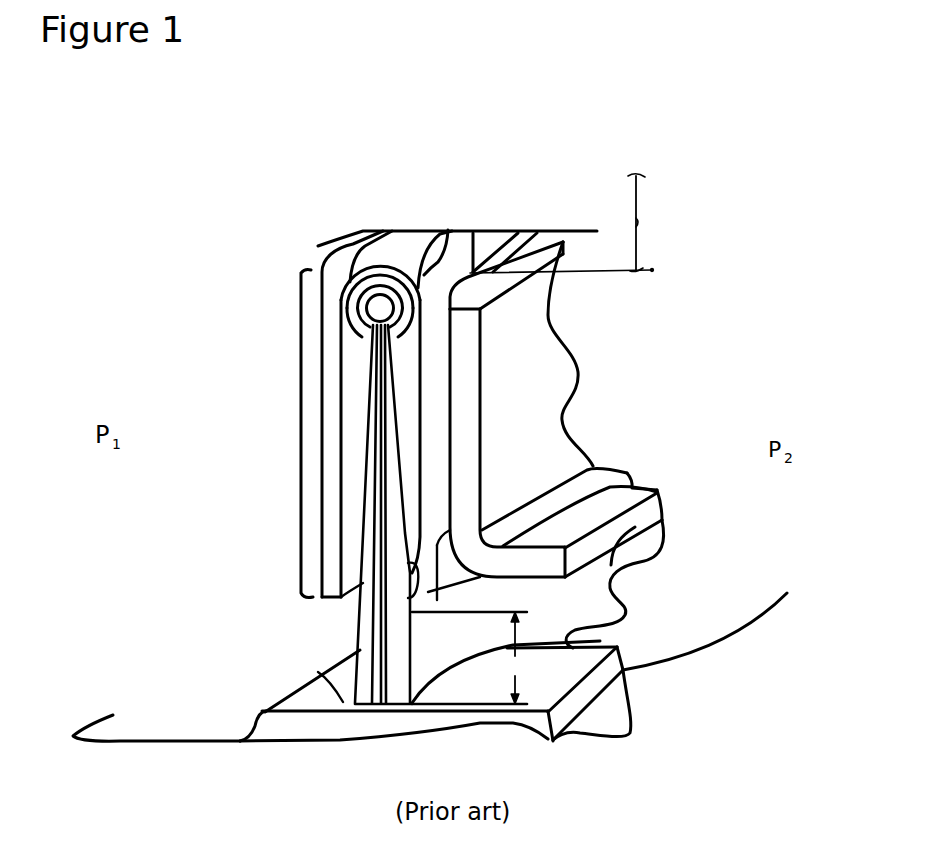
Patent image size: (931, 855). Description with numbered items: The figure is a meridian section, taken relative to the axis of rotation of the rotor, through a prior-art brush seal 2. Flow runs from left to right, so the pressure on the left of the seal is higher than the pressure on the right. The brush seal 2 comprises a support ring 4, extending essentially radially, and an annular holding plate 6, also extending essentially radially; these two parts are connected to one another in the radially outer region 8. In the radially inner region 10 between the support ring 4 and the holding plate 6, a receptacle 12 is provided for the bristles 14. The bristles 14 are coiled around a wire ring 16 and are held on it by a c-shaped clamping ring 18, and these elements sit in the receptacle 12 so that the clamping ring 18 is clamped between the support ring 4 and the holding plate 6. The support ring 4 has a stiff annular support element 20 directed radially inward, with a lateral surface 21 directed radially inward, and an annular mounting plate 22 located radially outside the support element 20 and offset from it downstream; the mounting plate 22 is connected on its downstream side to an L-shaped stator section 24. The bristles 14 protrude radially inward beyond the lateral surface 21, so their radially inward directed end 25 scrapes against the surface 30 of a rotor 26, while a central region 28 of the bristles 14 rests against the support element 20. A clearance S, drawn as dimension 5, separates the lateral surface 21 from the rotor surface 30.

The brush seal 2 is at (683, 126).
The support ring 4 is at (453, 433).
The gap height dimension 5 is at (469, 658).
The holding plate 6 is at (325, 494).
The radially outer region 8 is at (569, 223).
The radially inner region 10 is at (301, 436).
The receptacle 12 is at (360, 523).
The bristles 14 is at (360, 627).
The wire ring 16 is at (373, 312).
The clamping ring 18 is at (347, 287).
The support element 20 is at (440, 594).
The lateral surface 21 is at (425, 611).
The mounting plate 22 is at (433, 335).
The stator section 24 is at (470, 388).
The radially inward directed end 25 is at (318, 672).
The rotor 26 is at (630, 643).
The central region 28 is at (363, 607).
The surface 30 is at (282, 695).